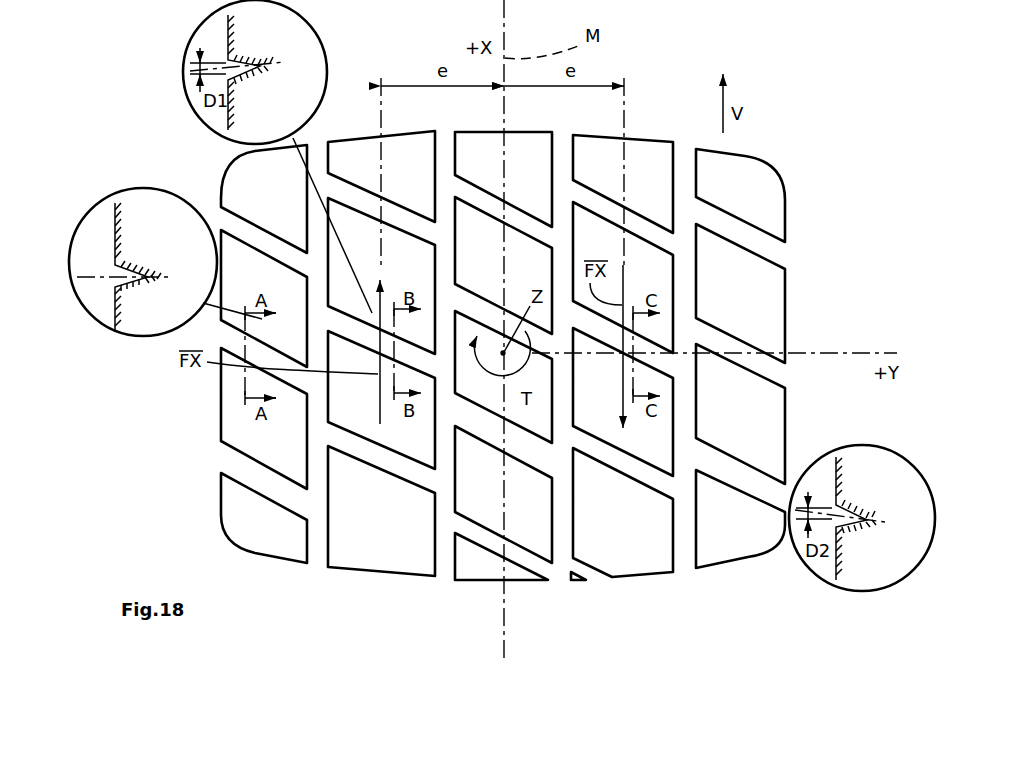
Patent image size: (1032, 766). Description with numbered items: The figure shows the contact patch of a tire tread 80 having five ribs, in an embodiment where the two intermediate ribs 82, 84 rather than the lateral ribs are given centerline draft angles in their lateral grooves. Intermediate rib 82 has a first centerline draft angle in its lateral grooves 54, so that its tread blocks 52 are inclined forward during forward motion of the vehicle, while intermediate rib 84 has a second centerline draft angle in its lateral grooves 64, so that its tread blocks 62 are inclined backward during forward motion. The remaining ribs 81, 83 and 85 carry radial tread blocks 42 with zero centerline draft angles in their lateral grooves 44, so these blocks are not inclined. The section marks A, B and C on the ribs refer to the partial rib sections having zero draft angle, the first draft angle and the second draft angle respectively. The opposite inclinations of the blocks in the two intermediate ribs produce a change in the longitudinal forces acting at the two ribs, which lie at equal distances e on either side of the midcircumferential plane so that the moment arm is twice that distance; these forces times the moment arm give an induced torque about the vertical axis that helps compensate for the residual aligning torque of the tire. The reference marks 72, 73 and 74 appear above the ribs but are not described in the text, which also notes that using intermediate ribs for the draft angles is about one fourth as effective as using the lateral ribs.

The tread block 42 is at (238, 414).
The lateral groove 44 is at (248, 235).
The tread block 52 is at (365, 538).
The lateral groove 54 is at (362, 199).
The tread block 62 is at (642, 550).
The lateral groove 64 is at (642, 227).
The circumferential groove 72 is at (381, 177).
The circumferential groove 73 is at (503, 168).
The circumferential groove 74 is at (632, 176).
The tread 80 is at (808, 228).
The rib 81 is at (259, 554).
The intermediate rib 82 is at (388, 579).
The rib 83 is at (482, 588).
The intermediate rib 84 is at (651, 583).
The rib 85 is at (736, 565).